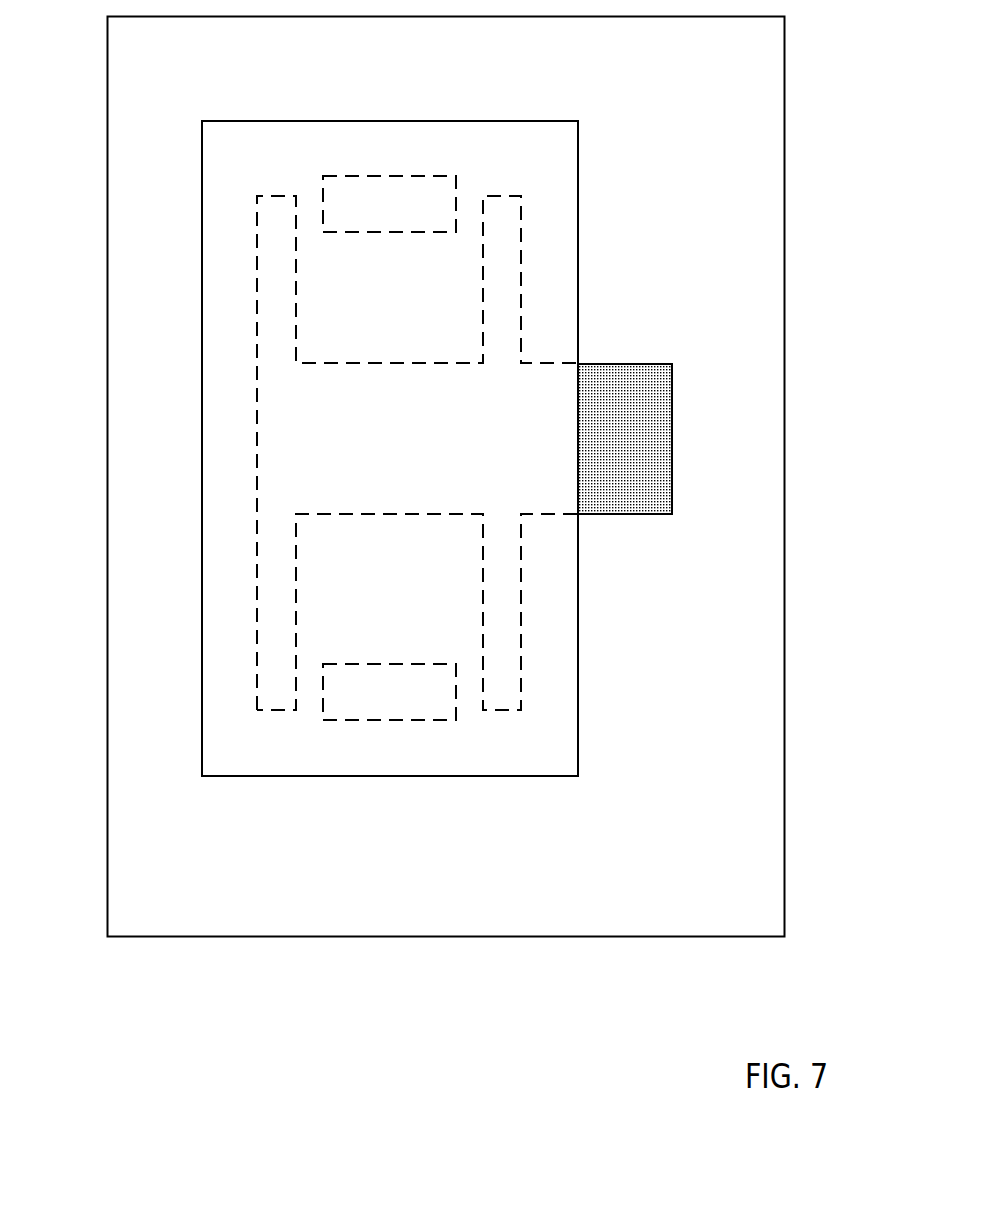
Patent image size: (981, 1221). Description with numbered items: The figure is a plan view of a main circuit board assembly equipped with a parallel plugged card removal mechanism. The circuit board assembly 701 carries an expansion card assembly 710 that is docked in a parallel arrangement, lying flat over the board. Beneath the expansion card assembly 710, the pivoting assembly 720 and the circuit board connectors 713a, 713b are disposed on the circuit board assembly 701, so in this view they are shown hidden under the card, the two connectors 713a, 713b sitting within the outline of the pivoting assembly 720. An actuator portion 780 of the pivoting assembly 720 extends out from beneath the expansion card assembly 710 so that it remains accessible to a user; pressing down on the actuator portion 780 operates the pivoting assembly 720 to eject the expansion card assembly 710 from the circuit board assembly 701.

The circuit board assembly 701 is at (150, 52).
The expansion card assembly 710 is at (517, 158).
The pivoting assembly 720 is at (308, 400).
The circuit board connector 713a is at (355, 203).
The circuit board connector 713b is at (386, 689).
The actuator portion 780 is at (636, 378).